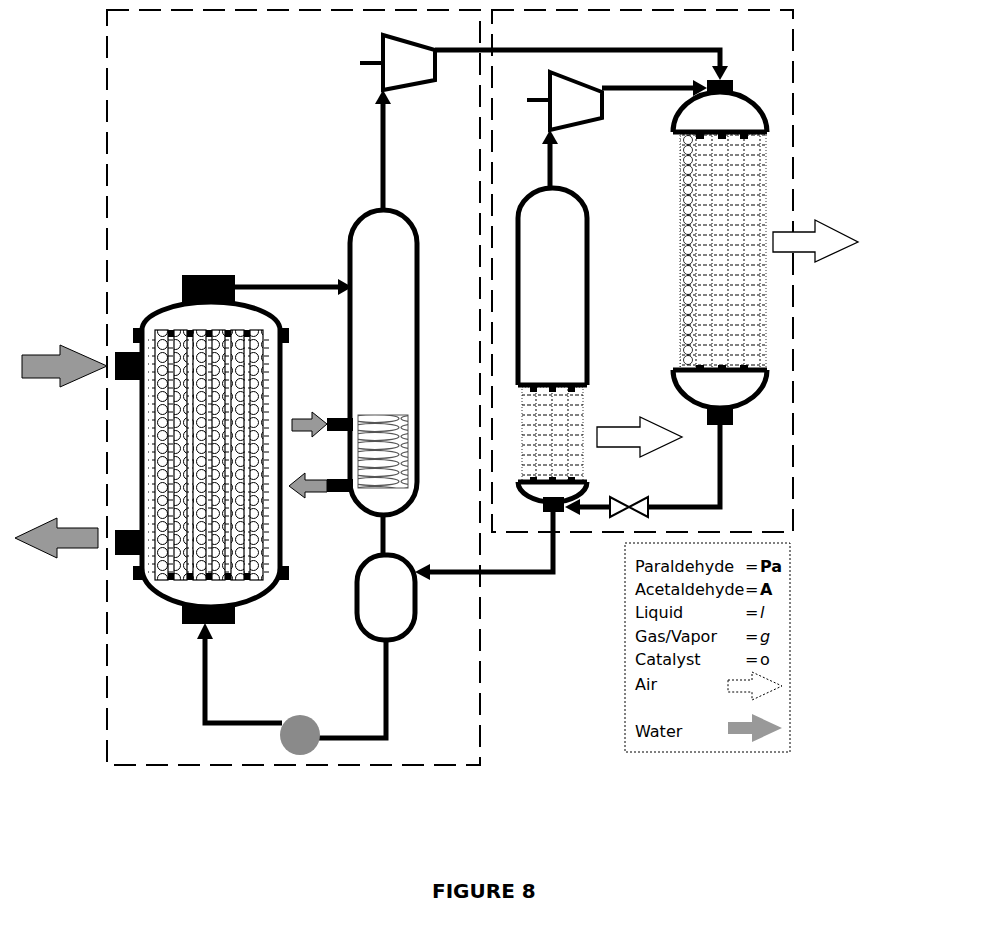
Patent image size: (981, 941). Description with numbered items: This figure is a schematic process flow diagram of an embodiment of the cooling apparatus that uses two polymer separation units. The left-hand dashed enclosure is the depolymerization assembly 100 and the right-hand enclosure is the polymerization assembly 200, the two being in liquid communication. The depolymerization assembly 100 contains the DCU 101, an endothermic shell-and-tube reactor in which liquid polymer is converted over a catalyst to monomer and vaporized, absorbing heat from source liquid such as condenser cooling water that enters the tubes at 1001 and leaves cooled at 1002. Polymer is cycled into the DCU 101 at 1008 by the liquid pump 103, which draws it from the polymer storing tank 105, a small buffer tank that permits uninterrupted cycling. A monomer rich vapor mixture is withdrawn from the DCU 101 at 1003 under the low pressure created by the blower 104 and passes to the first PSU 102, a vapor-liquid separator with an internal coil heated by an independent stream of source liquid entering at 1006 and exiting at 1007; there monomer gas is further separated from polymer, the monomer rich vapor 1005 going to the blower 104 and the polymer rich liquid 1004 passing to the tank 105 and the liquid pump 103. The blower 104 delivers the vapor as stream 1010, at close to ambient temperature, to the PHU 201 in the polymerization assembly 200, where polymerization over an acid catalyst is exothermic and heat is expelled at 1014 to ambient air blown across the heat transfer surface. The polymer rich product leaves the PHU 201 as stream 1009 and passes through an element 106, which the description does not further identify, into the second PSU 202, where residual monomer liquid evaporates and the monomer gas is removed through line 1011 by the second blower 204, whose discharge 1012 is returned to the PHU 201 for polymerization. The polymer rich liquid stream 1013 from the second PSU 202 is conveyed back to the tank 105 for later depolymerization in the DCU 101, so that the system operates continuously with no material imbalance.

The depolymerization assembly 100 is at (293, 387).
The polymerization assembly 200 is at (642, 271).
The DCU 101 is at (202, 449).
The PSU 102 is at (372, 362).
The liquid pump 103 is at (300, 723).
The blower 104 is at (386, 62).
The polymer storing tank 105 is at (386, 577).
The valve 106 is at (606, 495).
The PHU 201 is at (696, 252).
The second PSU 202 is at (552, 350).
The second blower 204 is at (552, 101).
The source liquid inlet 1001 is at (64, 353).
The source liquid outlet 1002 is at (56, 526).
The monomer rich vapor mixture 1003 is at (293, 281).
The polymer rich liquid 1004 is at (343, 693).
The monomer rich vapor 1005 is at (360, 150).
The source liquid to PSU 1006 is at (314, 410).
The source liquid from PSU 1007 is at (311, 473).
The polymer feed 1008 is at (216, 673).
The PHU outlet mixture 1009 is at (712, 466).
The vapor stream to PHU 1010 is at (581, 52).
The stream 1011 is at (530, 160).
The compressor outlet line 1012 is at (654, 79).
The polymer rich liquid stream 1013 is at (484, 562).
The heat rejection 1014 is at (727, 316).